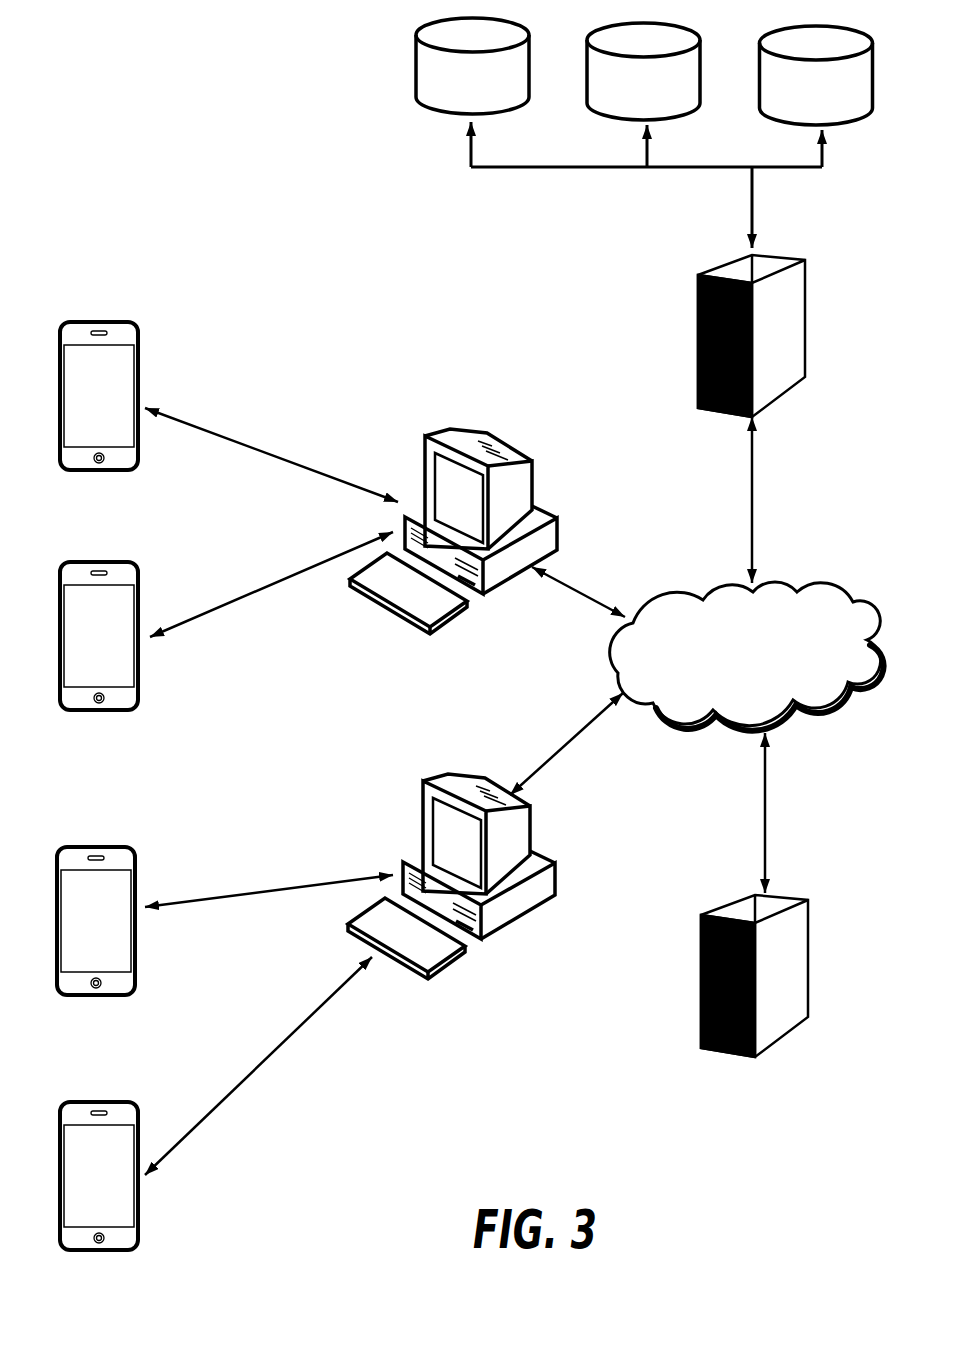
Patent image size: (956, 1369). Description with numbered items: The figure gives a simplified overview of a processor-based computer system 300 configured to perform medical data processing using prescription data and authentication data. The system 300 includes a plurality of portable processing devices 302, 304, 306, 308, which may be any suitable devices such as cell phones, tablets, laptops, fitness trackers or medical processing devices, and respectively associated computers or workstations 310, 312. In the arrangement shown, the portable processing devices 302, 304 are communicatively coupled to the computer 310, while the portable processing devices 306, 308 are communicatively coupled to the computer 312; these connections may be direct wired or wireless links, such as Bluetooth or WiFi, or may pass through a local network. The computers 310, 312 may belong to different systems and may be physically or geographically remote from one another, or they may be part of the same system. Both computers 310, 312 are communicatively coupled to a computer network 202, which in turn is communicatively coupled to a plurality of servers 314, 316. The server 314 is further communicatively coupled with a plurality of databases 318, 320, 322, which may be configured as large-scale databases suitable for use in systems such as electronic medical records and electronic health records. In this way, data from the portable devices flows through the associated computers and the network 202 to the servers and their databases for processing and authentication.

The processor-based computer system 300 is at (220, 170).
The computer network 202 is at (747, 656).
The portable processing device 302 is at (100, 320).
The portable processing device 304 is at (100, 560).
The portable processing device 306 is at (97, 845).
The portable processing device 308 is at (100, 1100).
The computer 310 is at (428, 436).
The computer 312 is at (457, 969).
The server 314 is at (698, 340).
The server 316 is at (757, 1058).
The database 318 is at (416, 70).
The database 320 is at (590, 38).
The database 322 is at (762, 50).